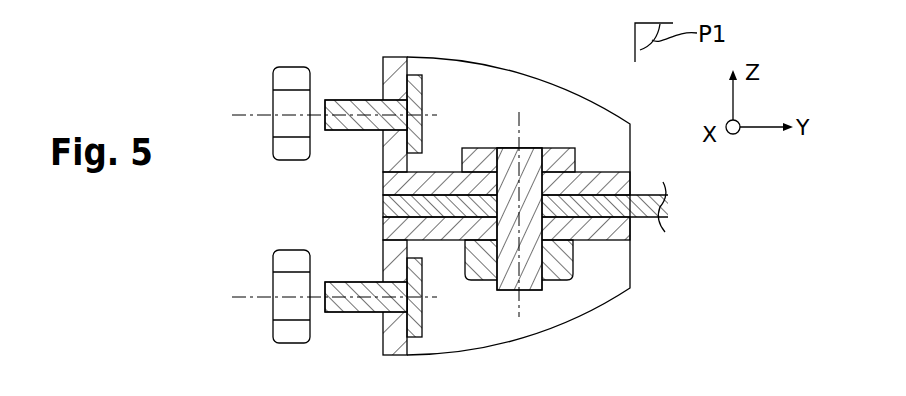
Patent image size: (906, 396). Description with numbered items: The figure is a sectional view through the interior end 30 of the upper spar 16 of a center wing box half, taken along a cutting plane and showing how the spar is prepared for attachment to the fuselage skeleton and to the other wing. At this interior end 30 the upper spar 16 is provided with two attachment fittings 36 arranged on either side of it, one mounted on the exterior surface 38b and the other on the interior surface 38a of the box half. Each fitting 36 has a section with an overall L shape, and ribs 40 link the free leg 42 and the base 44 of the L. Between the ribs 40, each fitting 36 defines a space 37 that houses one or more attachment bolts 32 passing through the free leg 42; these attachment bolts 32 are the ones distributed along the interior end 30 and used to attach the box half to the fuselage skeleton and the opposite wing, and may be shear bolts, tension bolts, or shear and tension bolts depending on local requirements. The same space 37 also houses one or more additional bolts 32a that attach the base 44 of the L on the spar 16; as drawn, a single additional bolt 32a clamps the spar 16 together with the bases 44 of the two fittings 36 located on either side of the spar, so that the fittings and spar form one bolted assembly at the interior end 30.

The upper spar 16 is at (643, 207).
The interior end 30 is at (485, 199).
The attachment bolts 32 is at (342, 90).
The additional bolts 32a is at (573, 264).
The attachment fittings 36 is at (588, 99).
The space 37 is at (498, 121).
The interior surface 38a is at (394, 225).
The exterior surface 38b is at (394, 176).
The ribs 40 is at (453, 97).
The free leg 42 is at (392, 75).
The base 44 is at (597, 185).